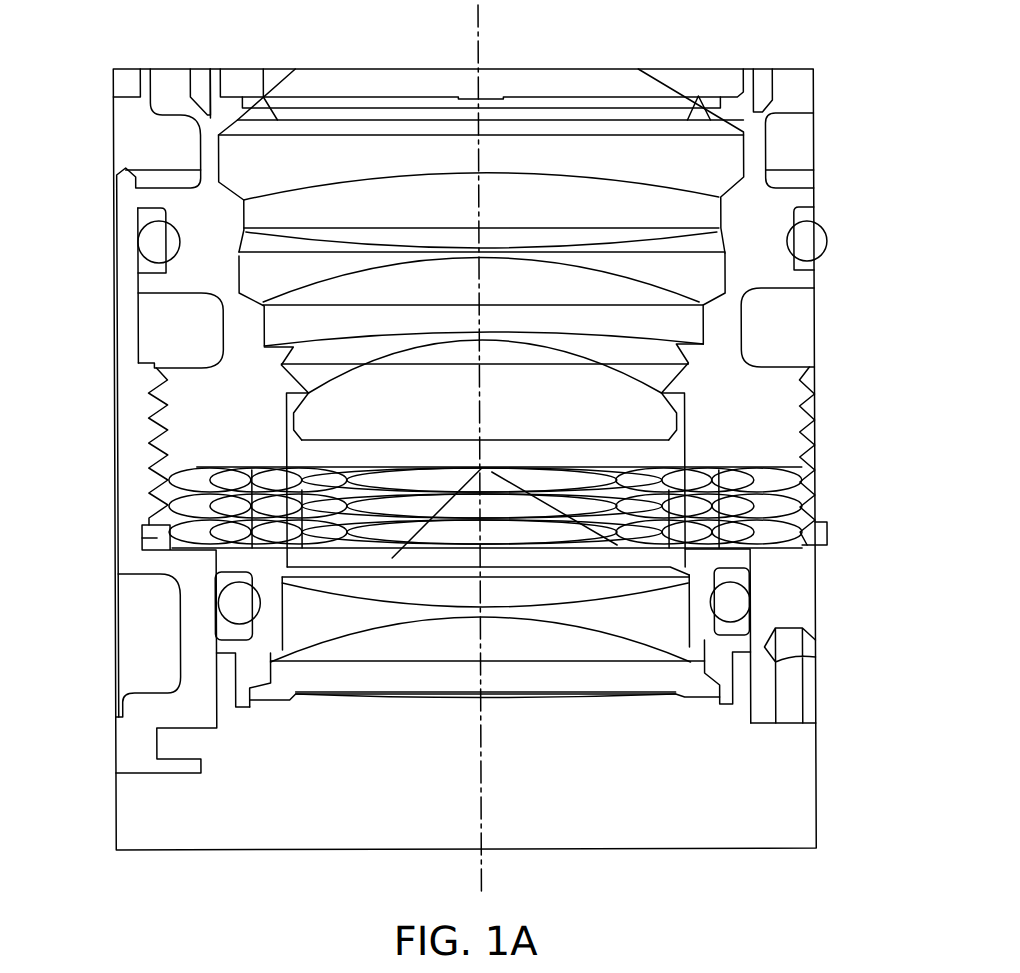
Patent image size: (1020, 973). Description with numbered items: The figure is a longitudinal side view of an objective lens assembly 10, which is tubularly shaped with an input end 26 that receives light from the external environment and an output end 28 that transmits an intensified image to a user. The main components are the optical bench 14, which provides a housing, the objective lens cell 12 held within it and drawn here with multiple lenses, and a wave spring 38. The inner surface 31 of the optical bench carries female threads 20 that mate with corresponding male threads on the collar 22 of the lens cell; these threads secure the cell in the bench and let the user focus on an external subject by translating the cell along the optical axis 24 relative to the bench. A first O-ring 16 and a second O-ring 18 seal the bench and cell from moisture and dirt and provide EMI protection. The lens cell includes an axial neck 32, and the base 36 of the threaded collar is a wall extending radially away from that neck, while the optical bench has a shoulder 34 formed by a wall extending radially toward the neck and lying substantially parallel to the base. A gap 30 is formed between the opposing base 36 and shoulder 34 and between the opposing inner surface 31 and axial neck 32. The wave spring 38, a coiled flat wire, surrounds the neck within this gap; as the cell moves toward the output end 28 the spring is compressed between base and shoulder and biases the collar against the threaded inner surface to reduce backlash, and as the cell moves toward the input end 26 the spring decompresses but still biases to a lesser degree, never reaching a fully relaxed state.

The objective lens assembly 10 is at (851, 30).
The objective lens cell 12 is at (205, 331).
The optical bench 14 is at (119, 725).
The first O-ring 16 is at (806, 240).
The second O-ring 18 is at (748, 602).
The female threads 20 is at (147, 375).
The collar 22 is at (757, 393).
The optical axis 24 is at (490, 38).
The input end 26 is at (618, 77).
The output end 28 is at (275, 832).
The gap 30 is at (140, 538).
The inner surface 31 is at (137, 540).
The axial neck 32 is at (165, 510).
The shoulder 34 is at (167, 548).
The base 36 is at (255, 515).
The wave spring 38 is at (238, 485).